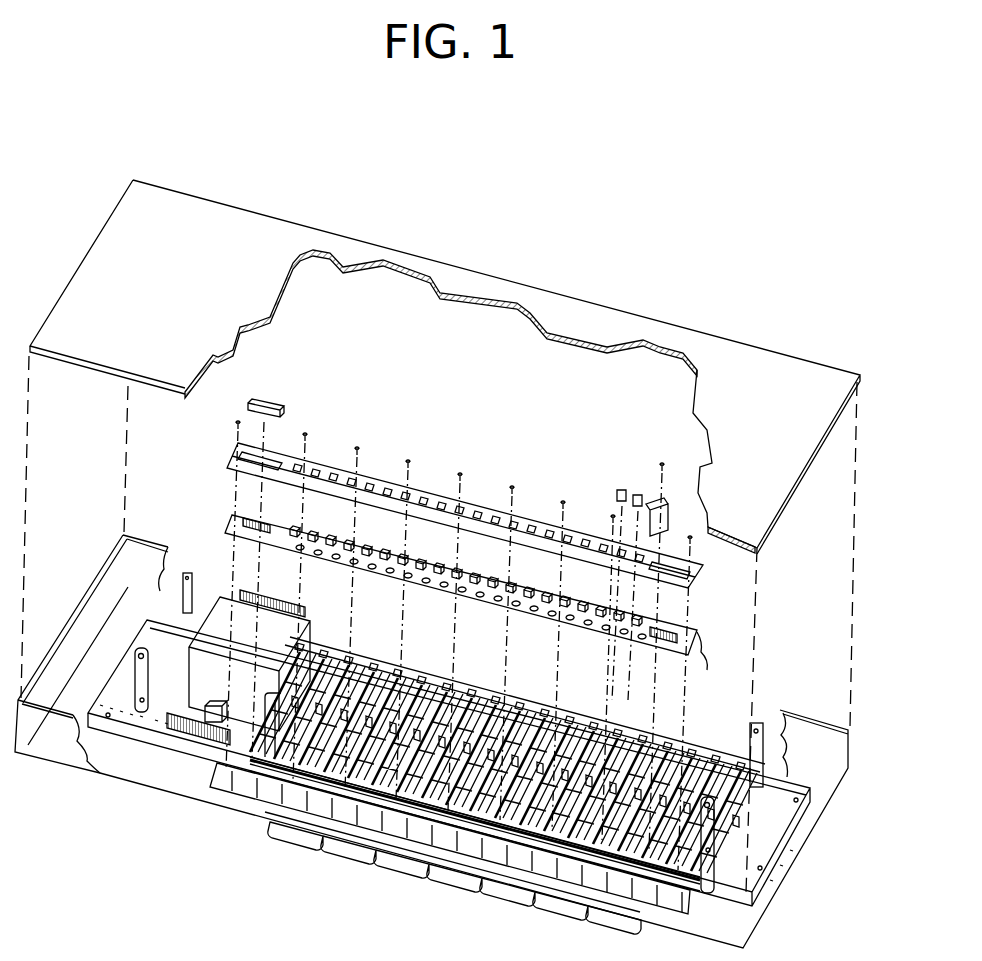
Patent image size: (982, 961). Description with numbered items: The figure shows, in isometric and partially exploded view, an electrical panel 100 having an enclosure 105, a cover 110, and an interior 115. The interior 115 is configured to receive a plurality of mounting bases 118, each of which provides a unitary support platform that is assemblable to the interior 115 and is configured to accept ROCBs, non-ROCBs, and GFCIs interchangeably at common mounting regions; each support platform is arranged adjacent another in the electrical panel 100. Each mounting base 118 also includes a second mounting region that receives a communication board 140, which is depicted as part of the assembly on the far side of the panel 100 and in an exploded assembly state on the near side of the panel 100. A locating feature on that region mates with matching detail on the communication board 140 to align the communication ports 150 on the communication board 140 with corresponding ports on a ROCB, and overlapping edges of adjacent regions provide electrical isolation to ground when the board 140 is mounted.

The electrical panel 100 is at (761, 308).
The enclosure 105 is at (848, 753).
The cover 110 is at (583, 300).
The interior 115 is at (772, 853).
The mounting base 118 is at (387, 863).
The communication board 140 is at (705, 650).
The communication ports 150 is at (327, 534).